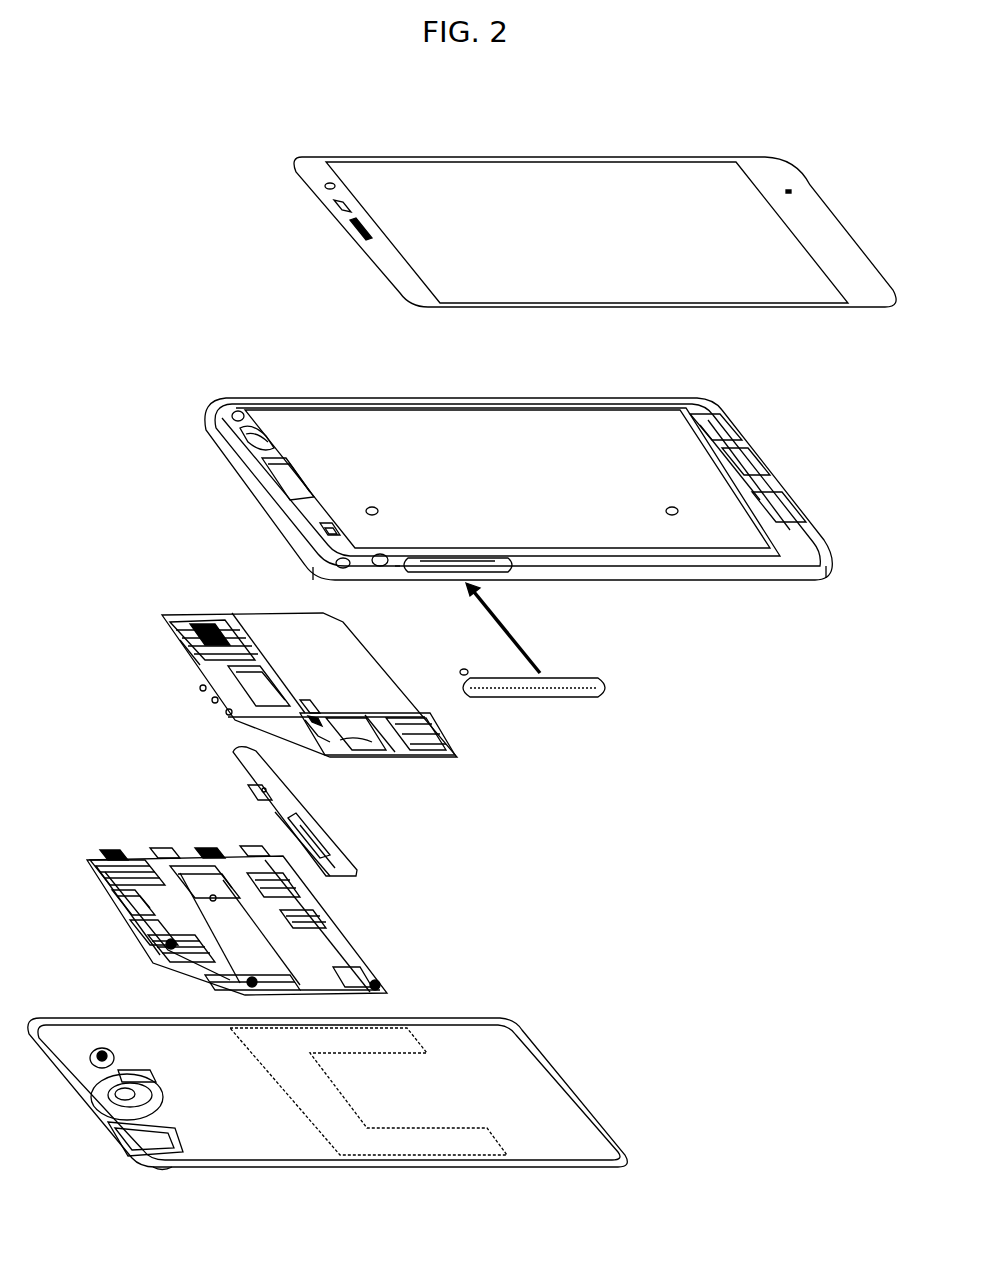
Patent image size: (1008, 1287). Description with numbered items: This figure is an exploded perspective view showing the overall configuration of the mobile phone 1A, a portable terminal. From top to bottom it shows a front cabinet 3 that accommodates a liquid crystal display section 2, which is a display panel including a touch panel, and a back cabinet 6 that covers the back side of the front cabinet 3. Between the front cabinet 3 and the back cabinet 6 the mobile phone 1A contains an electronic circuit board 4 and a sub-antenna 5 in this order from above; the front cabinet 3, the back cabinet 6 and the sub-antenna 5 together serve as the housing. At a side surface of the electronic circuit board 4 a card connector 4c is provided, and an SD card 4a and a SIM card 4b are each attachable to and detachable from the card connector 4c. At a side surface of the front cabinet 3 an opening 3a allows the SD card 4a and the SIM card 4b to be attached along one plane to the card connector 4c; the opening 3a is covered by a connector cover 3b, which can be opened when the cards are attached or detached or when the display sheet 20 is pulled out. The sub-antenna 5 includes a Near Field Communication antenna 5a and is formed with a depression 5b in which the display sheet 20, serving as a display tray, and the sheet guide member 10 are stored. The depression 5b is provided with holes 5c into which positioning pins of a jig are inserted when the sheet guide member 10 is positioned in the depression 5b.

The mobile phone 1A is at (116, 112).
The liquid crystal display section 2 is at (290, 157).
The front cabinet 3 is at (210, 406).
The opening 3a is at (500, 578).
The connector cover 3b is at (612, 688).
The electronic circuit board 4 is at (162, 626).
The SD card 4a is at (426, 760).
The SIM card 4b is at (372, 760).
The card connector 4c is at (365, 710).
The sub-antenna 5 is at (86, 864).
The Near Field Communication antenna 5a is at (290, 882).
The depression 5b is at (282, 982).
The holes 5c is at (218, 910).
The back cabinet 6 is at (540, 1042).
The sheet guide member 10 is at (236, 760).
The display sheet 20 is at (278, 812).